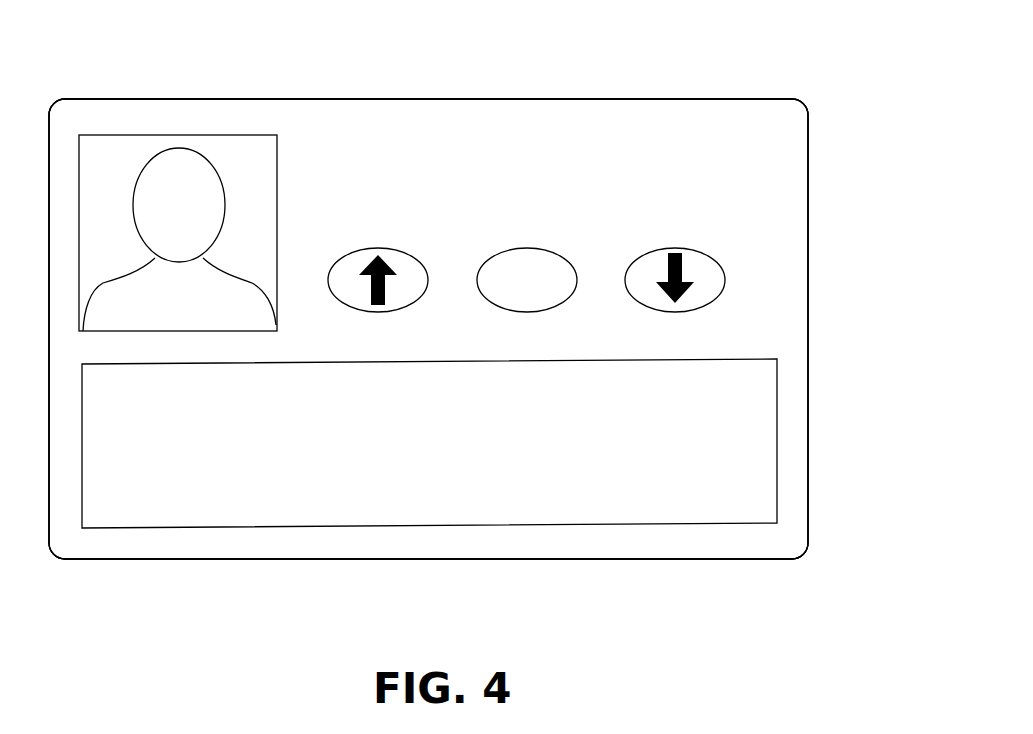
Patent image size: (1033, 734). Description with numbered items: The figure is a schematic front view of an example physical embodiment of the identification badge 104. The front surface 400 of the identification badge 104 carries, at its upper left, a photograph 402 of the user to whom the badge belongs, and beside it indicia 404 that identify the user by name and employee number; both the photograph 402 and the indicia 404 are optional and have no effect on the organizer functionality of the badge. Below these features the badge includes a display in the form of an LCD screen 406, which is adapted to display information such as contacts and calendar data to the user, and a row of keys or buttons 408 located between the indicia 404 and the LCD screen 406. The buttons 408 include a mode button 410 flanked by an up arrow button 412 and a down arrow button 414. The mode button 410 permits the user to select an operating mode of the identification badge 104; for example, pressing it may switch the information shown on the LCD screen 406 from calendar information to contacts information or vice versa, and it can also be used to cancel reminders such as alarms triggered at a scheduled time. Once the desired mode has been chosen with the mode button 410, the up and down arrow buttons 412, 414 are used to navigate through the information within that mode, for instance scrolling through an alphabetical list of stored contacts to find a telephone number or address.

The identification badge 104 is at (775, 64).
The front surface 400 is at (790, 195).
The photograph 402 is at (244, 141).
The indicia 404 is at (675, 131).
The LCD screen 406 is at (447, 456).
The buttons 408 is at (800, 287).
The mode button 410 is at (552, 303).
The up arrow button 412 is at (395, 305).
The down arrow button 414 is at (702, 300).